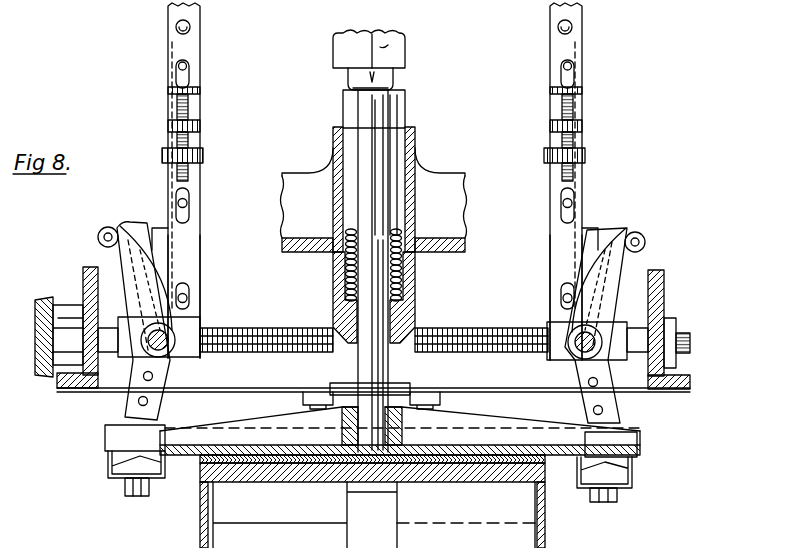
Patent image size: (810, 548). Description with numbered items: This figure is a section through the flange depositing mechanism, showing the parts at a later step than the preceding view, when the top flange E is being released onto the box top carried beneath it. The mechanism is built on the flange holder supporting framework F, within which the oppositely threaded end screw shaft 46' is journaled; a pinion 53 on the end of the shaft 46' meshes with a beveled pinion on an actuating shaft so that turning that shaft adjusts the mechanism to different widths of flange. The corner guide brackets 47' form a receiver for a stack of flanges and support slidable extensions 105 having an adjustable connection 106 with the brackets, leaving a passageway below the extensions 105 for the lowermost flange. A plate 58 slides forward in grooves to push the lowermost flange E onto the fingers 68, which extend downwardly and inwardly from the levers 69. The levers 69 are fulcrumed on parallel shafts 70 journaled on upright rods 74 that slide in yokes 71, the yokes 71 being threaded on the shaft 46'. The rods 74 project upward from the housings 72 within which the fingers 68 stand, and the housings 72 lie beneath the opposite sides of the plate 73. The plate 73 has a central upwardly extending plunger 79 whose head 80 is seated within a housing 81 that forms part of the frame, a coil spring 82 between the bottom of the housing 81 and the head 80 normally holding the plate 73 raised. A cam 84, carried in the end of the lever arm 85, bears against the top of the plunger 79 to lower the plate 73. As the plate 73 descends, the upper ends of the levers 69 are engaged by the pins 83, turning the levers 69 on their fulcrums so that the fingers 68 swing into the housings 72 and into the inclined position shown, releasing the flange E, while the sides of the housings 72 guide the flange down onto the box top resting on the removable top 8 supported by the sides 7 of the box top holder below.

The corner guide bracket 47' is at (403, 181).
The lever arm 85 is at (392, 47).
The cam 84 is at (393, 77).
The head 80 is at (405, 110).
The adjustable connection 106 is at (200, 128).
The slidable extension 105 is at (183, 232).
The lever 69 is at (127, 210).
The pin 83 is at (98, 236).
The yoke 71 is at (160, 240).
The flange holder supporting framework F is at (82, 283).
The parallel shaft 70 is at (167, 333).
The coil spring 82 is at (333, 268).
The housing 81 is at (413, 268).
The end screw shaft 46' is at (374, 323).
The pinion 53 is at (45, 365).
The plate 58 is at (240, 388).
The plunger 79 is at (373, 365).
The plate 73 is at (477, 442).
The housing 72 is at (108, 478).
The box top flange E is at (152, 467).
The finger 68 is at (147, 478).
The upright rod 74 is at (142, 497).
The side of box top holder 7 is at (230, 487).
The removable top 8 is at (298, 473).